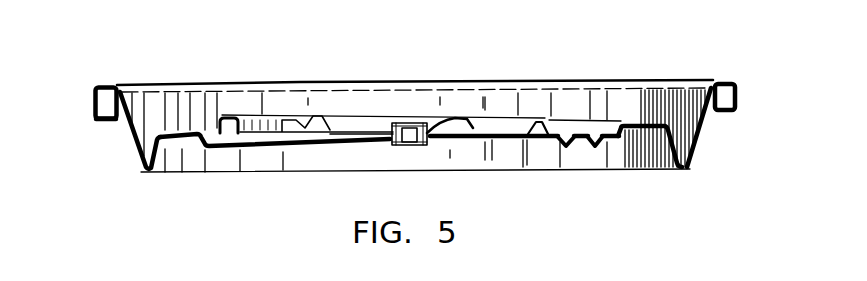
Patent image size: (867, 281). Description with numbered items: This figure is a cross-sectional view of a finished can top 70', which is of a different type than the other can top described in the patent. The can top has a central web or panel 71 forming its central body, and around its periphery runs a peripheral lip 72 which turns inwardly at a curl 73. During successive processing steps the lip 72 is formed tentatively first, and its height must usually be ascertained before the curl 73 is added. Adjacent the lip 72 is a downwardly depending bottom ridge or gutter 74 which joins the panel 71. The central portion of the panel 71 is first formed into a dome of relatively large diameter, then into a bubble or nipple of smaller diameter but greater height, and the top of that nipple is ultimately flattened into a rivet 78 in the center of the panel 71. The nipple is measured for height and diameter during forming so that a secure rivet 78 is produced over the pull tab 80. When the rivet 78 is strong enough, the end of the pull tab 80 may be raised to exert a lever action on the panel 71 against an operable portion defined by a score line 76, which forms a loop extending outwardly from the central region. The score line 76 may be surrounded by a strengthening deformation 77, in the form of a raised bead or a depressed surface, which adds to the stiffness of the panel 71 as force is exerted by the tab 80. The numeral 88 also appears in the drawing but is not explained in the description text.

The finished can top 70' is at (415, 103).
The central web or panel 71 is at (212, 138).
The peripheral lip 72 is at (113, 86).
The curl 73 is at (115, 120).
The bottom ridge or gutter 74 is at (147, 162).
The score line 76 is at (594, 136).
The strengthening deformation 77 is at (623, 126).
The rivet 78 is at (408, 122).
The pull tab 80 is at (237, 118).
The first locating notch 88 is at (566, 136).